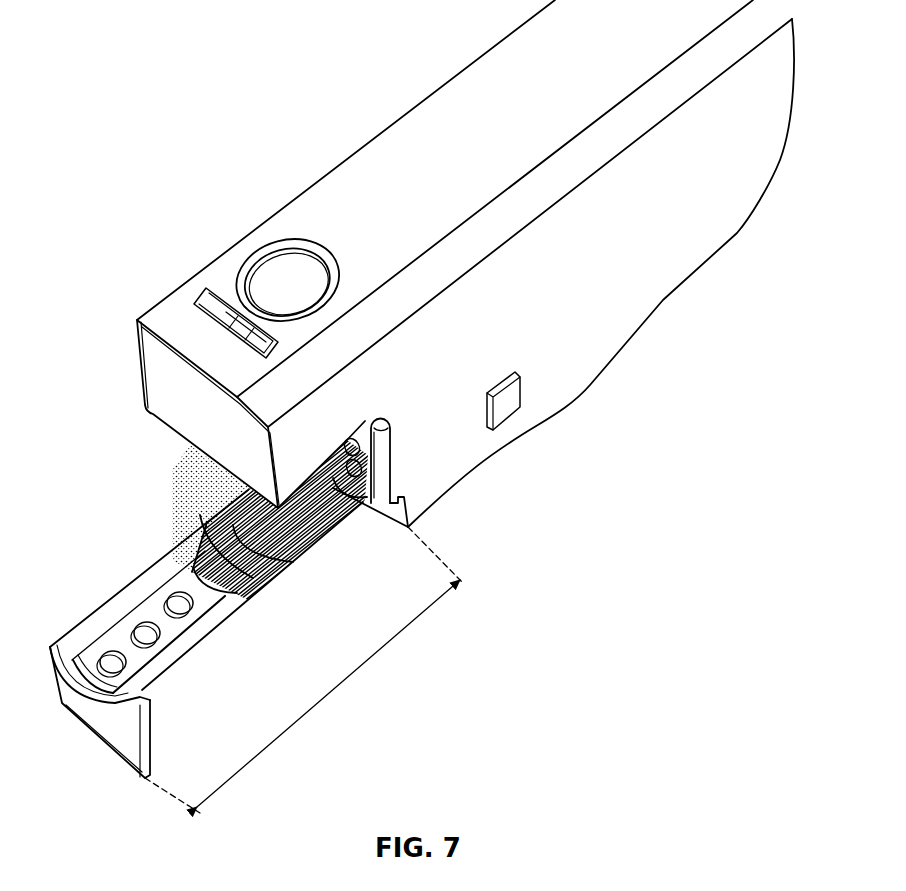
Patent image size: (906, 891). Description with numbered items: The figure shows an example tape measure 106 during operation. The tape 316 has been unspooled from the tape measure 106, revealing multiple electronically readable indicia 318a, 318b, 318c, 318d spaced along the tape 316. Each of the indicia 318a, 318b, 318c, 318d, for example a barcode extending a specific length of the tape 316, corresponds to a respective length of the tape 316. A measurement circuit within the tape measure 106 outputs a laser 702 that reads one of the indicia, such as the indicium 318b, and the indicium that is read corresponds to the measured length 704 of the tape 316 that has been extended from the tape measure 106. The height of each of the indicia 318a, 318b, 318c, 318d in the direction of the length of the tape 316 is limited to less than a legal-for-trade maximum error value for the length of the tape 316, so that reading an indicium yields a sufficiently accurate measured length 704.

The tape measure 106 is at (348, 157).
The tape 316 is at (90, 637).
The electronically readable indicium 318a is at (205, 632).
The electronically readable indicium 318b is at (240, 587).
The electronically readable indicium 318c is at (293, 528).
The electronically readable indicium 318d is at (337, 491).
The laser 702 is at (207, 527).
The measured length 704 is at (325, 700).